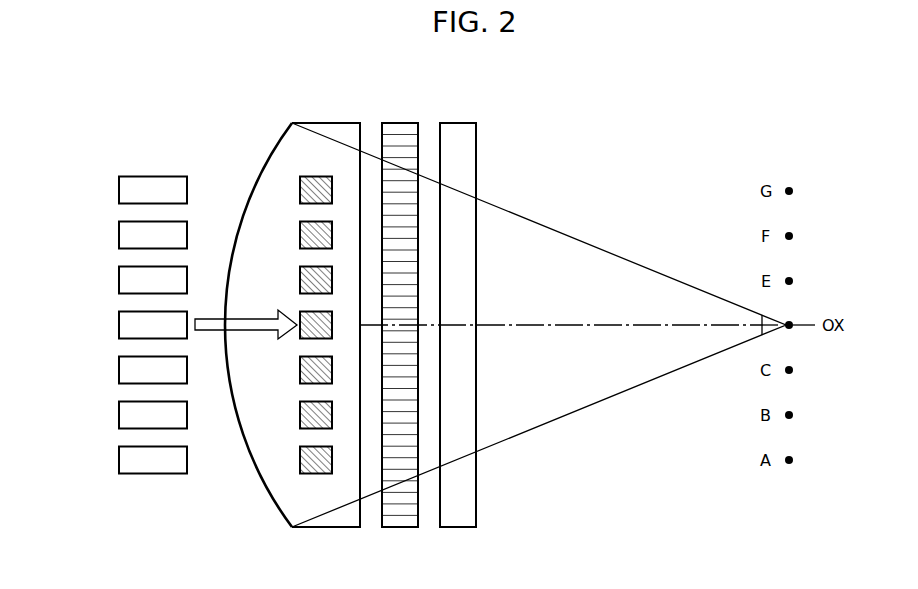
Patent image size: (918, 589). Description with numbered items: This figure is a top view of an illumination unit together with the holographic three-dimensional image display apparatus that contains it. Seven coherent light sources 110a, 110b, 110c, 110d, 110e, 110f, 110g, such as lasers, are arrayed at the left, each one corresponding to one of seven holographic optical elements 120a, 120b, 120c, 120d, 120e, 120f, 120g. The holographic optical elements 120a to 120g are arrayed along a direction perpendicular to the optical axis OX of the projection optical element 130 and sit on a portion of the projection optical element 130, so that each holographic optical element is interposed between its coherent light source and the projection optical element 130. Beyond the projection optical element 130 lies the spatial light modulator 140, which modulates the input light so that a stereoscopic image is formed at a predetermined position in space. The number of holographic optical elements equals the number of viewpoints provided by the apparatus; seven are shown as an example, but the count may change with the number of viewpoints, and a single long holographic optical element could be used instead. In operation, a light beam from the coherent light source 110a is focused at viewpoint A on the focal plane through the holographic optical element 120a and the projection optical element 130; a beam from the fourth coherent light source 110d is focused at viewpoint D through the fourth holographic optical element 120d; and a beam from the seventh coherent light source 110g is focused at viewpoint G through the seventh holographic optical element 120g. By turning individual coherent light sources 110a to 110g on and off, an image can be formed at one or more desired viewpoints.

The coherent light source 110a is at (119, 190).
The coherent light source 110b is at (119, 235).
The coherent light source 110c is at (119, 280).
The fourth coherent light source 110d is at (119, 325).
The coherent light source 110e is at (119, 370).
The coherent light source 110f is at (119, 415).
The seventh coherent light source 110g is at (119, 460).
The holographic optical element 120a is at (318, 176).
The holographic optical element 120b is at (300, 224).
The holographic optical element 120c is at (300, 270).
The fourth holographic optical element 120d is at (300, 313).
The holographic optical element 120e is at (300, 376).
The holographic optical element 120f is at (300, 428).
The seventh holographic optical element 120g is at (314, 474).
The projection optical element 130 is at (353, 122).
The spatial light modulator 140 is at (460, 122).